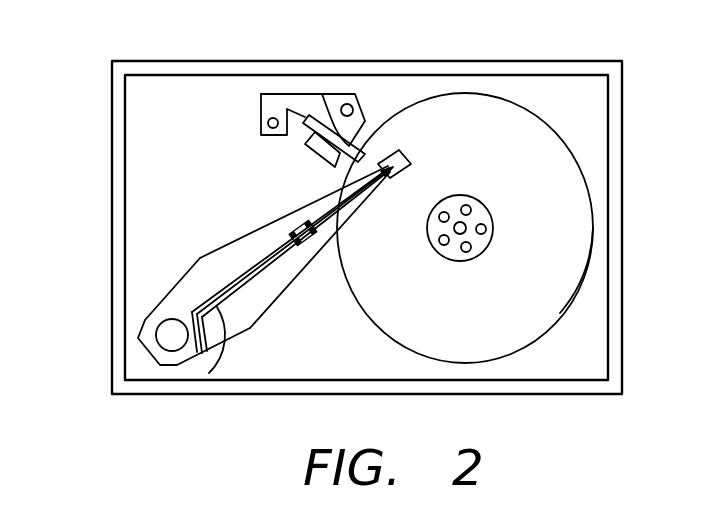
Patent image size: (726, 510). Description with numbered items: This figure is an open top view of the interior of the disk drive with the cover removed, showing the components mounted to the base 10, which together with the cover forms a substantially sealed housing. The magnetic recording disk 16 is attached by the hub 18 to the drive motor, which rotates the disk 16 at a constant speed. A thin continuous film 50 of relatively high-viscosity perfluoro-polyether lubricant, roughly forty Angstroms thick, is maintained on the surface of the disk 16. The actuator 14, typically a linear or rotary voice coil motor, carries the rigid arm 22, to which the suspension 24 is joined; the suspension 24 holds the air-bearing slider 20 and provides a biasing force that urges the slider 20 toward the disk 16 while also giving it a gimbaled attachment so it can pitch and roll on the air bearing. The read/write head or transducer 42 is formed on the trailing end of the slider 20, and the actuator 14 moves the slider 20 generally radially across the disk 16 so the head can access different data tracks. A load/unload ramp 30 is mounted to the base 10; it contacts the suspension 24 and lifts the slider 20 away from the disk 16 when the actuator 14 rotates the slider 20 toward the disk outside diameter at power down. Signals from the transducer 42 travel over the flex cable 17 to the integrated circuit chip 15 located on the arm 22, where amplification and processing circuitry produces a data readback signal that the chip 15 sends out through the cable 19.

The base 10 is at (616, 145).
The actuator 14 is at (163, 344).
The integrated circuit chip 15 is at (297, 223).
The magnetic recording disk 16 is at (577, 290).
The flex cable 17 is at (347, 207).
The hub 18 is at (486, 212).
The cable 19 is at (203, 353).
The air-bearing slider 20 is at (391, 150).
The rigid arm 22 is at (172, 300).
The suspension 24 is at (333, 214).
The load/unload ramp 30 is at (342, 122).
The read/write head or transducer 42 is at (390, 180).
The thin continuous film of lubricant 50 is at (499, 114).